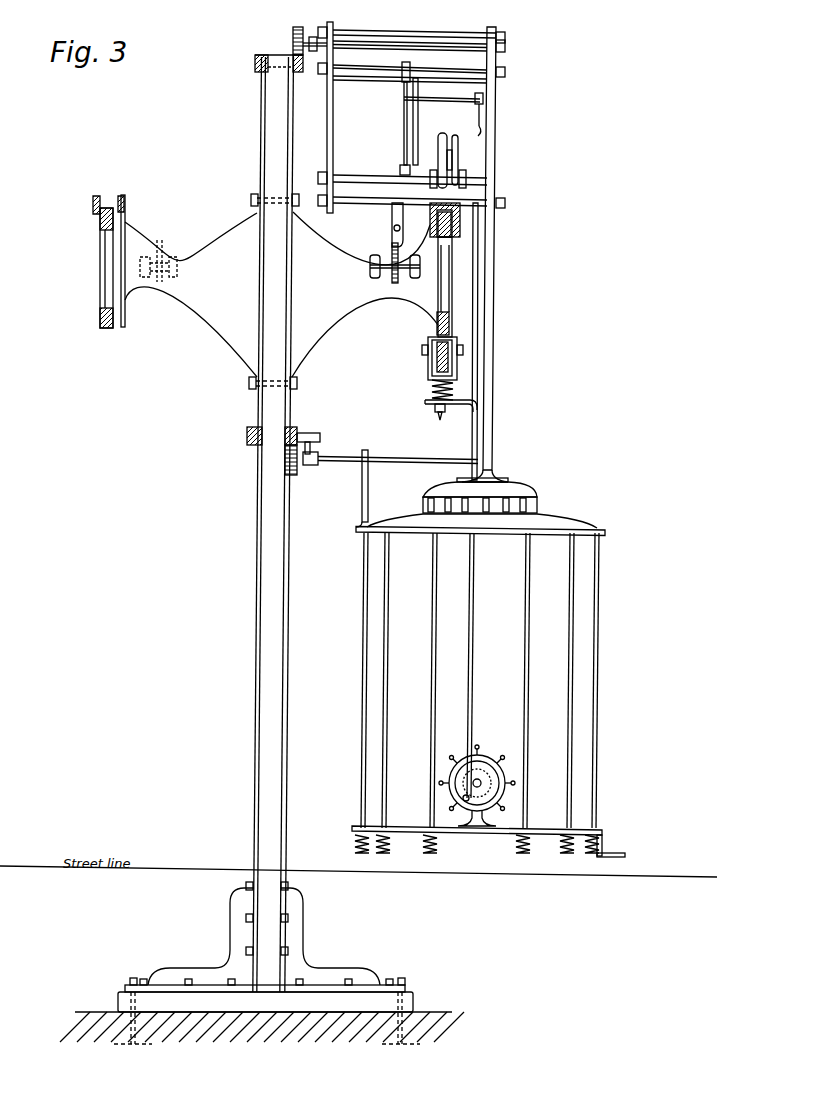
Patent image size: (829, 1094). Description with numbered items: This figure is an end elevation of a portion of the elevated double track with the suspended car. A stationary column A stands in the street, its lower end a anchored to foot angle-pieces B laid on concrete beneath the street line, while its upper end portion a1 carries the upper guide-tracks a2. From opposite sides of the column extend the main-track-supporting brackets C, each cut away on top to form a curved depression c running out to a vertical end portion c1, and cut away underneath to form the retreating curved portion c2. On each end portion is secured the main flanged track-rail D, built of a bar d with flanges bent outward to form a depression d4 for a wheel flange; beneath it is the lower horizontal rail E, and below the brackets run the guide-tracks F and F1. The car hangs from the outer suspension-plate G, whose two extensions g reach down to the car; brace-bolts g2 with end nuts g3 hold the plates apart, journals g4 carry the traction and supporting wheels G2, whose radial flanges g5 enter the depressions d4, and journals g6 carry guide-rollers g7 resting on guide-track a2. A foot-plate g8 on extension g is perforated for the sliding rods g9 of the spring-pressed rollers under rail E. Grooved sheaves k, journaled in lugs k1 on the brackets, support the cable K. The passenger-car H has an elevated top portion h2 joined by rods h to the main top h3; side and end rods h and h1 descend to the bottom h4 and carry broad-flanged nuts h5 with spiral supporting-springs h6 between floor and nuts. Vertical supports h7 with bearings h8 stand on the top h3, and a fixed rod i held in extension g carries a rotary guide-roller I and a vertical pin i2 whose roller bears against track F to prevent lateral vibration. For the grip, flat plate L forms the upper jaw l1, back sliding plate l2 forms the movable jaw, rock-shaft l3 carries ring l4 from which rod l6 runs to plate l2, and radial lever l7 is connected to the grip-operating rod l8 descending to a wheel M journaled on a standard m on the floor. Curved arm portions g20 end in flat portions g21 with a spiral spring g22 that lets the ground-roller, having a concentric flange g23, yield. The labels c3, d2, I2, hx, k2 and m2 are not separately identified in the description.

The stationary column A is at (257, 638).
The lower end of column a is at (302, 72).
The upper end portion of column a1 is at (274, 242).
The upper guide-track a2 is at (255, 62).
The foot angle-piece B is at (352, 982).
The main-track-supporting bracket C is at (281, 294).
The curved depression c is at (273, 249).
The vertical end portion of bracket c1 is at (100, 272).
The under retreating curved portion c2 is at (370, 312).
The arm lower web c3 is at (216, 322).
The main flanged track-rail D is at (297, 216).
The rail bar d is at (430, 224).
The bearing rod d2 is at (93, 205).
The depression d4 is at (100, 225).
The lower horizontal rail E is at (449, 324).
The guide-track F is at (298, 432).
The guide-track F1 is at (247, 437).
The rotary guide-roller I is at (292, 476).
The gear plate I2 is at (320, 437).
The horizontal fixed rod i is at (408, 457).
The vertical pin i2 is at (312, 463).
The suspension-plate G is at (497, 150).
The traction and supporting flanged wheel G2 is at (333, 120).
The extension of plate G g is at (470, 31).
The brace-bolt g2 is at (365, 203).
The end nut g3 is at (505, 43).
The journal g4 is at (381, 176).
The radial flange of wheel g5 is at (438, 156).
The transverse journal g6 is at (378, 67).
The guide-roller g7 is at (298, 27).
The foot-plate g8 is at (435, 409).
The sliding rod g9 is at (440, 419).
The curved portion of arm g20 is at (430, 388).
The flat portion g21 is at (422, 351).
The spiral spring g22 is at (428, 341).
The concentric flange g23 is at (425, 401).
The passenger-car H is at (491, 680).
The rod h is at (363, 673).
The floor-supporting rod h1 is at (540, 676).
The elevated top portion h2 is at (528, 491).
The main top portion h3 is at (566, 527).
The car bottom h4 is at (548, 831).
The broad-flanged nut h5 is at (355, 852).
The spiral supporting-spring h6 is at (355, 842).
The vertical support h7 is at (368, 484).
The bearing h8 is at (366, 452).
The slotted band hx is at (538, 506).
The cable K is at (393, 228).
The grooved sheave k is at (392, 270).
The lug k1 is at (418, 259).
The roller k2 is at (370, 266).
The flat plate L is at (404, 120).
The upper jaw l1 is at (392, 212).
The back sliding plate l2 is at (392, 247).
The rock-shaft l3 is at (452, 97).
The circular ring l4 is at (420, 98).
The rod l6 is at (418, 110).
The radial lever l7 is at (478, 118).
The grip-operating rod l8 is at (469, 637).
The wheel M is at (490, 760).
The standard m is at (480, 821).
The wheel pin m2 is at (469, 798).